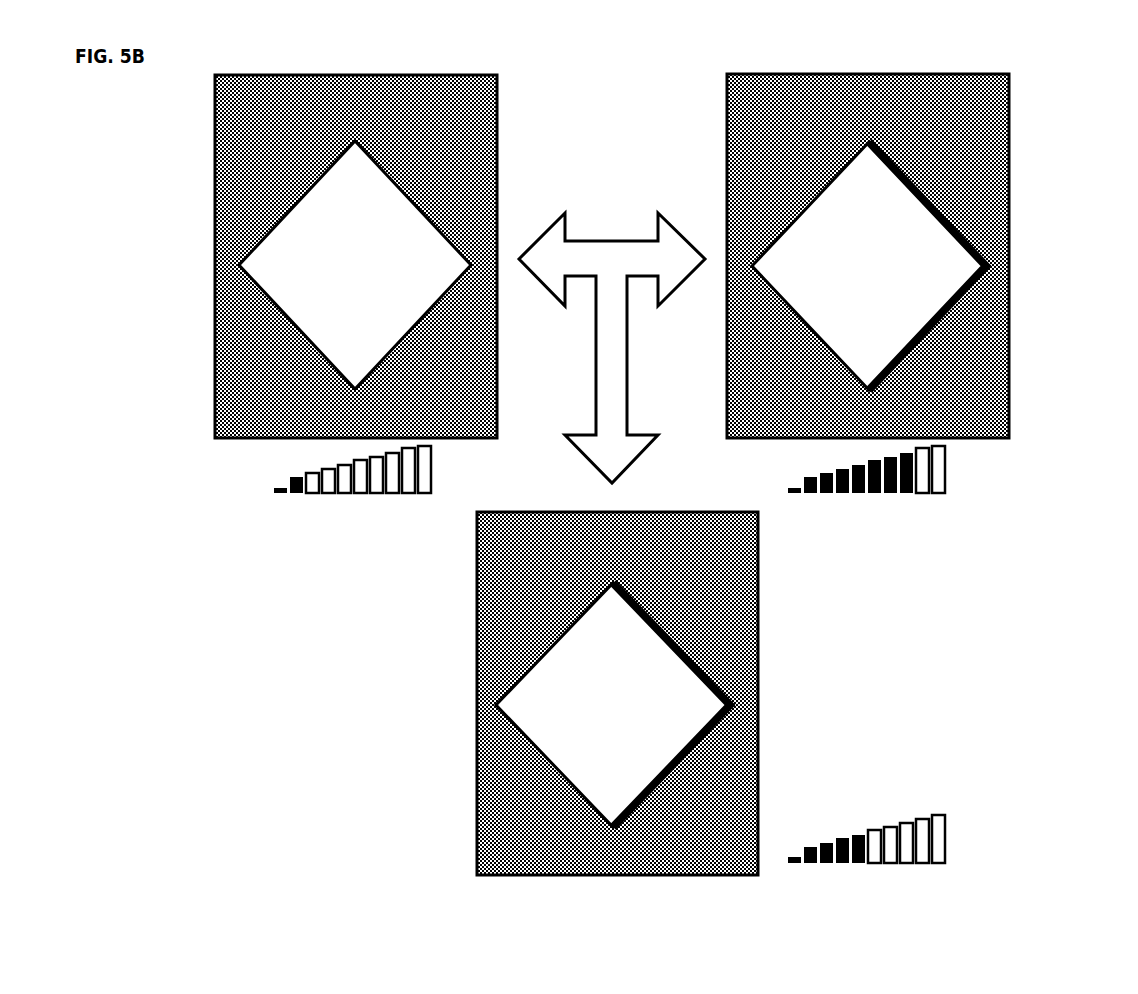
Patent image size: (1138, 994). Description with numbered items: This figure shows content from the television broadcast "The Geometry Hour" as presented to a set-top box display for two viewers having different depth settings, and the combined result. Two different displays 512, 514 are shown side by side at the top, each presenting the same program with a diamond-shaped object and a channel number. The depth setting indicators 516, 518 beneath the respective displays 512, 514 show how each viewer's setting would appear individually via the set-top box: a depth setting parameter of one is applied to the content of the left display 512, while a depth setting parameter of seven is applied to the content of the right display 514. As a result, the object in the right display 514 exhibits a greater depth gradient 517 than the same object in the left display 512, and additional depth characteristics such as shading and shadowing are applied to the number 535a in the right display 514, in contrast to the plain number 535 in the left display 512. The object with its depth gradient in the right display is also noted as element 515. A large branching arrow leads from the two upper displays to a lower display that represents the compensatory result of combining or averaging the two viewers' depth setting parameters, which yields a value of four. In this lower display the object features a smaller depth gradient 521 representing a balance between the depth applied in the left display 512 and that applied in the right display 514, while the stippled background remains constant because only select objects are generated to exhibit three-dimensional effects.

The display 512 is at (357, 256).
The display 514 is at (873, 256).
The diamond shape icon 515 is at (797, 212).
The depth setting indicator 516 is at (440, 466).
The depth gradient 517 is at (913, 176).
The depth setting indicator 518 is at (952, 466).
The depth gradient 521 is at (657, 620).
The channel number 535 is at (370, 273).
The number 535a is at (883, 272).